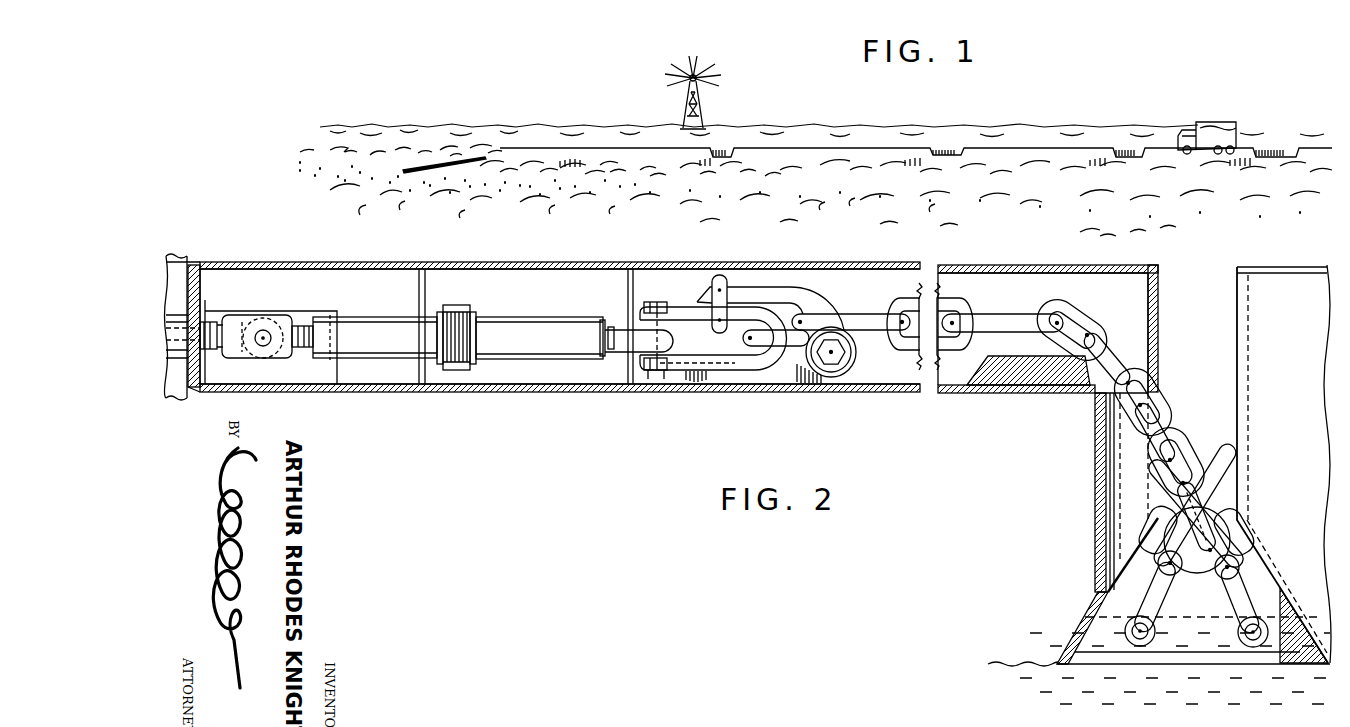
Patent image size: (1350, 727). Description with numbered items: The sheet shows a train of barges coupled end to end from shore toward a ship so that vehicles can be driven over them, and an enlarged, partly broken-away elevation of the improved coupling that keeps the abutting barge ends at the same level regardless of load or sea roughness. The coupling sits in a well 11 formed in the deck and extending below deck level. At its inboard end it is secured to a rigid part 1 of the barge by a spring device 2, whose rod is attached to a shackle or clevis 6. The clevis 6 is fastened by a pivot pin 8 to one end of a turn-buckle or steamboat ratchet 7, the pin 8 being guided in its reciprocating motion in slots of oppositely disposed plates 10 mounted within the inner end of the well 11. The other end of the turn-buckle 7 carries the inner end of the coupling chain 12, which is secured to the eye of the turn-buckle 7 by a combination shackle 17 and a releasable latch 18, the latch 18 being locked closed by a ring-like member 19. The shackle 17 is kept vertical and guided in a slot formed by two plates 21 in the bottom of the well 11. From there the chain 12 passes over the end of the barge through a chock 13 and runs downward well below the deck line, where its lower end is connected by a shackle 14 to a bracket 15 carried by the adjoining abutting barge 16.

The rigid part 1 is at (205, 306).
The spring device 2 is at (185, 389).
The shackle or clevis 6 is at (241, 323).
The turn-buckle or steamboat ratchet 7 is at (473, 306).
The pivot pin 8 is at (271, 333).
The plates 10 is at (300, 376).
The well 11 is at (570, 376).
The coupling chain 12 is at (998, 326).
The chock 13 is at (1085, 392).
The shackle 14 is at (1238, 600).
The bracket 15 is at (1107, 640).
The adjoining abutting barge 16 is at (1298, 494).
The combination shackle 17 is at (730, 366).
The releasable latch 18 is at (797, 372).
The ring-like member 19 is at (720, 275).
The plates 21 is at (775, 382).